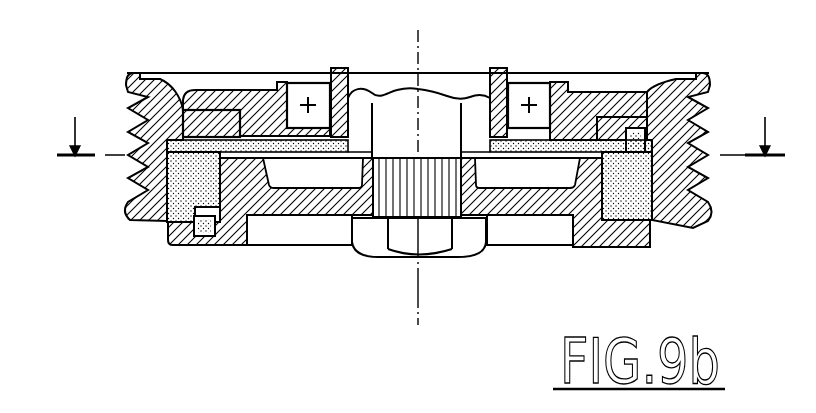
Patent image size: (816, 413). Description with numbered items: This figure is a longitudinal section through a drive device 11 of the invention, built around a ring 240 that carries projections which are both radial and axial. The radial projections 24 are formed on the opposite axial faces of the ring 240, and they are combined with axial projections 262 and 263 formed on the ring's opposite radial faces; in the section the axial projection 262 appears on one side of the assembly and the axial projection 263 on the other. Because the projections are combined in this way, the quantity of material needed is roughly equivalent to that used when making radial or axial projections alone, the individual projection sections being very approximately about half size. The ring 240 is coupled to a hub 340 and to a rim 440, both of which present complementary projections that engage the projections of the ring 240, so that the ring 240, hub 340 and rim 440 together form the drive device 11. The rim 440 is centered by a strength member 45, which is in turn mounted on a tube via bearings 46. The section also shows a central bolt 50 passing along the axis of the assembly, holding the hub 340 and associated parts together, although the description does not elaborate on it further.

The drive device 11 is at (419, 178).
The radial projections 24 is at (138, 192).
The strength member 45 is at (213, 98).
The bearings 46 is at (297, 92).
The bolt 50 is at (437, 115).
The ring 240 is at (657, 178).
The axial projection 262 is at (634, 133).
The axial projection 263 is at (205, 237).
The hub 340 is at (527, 207).
The rim 440 is at (190, 128).